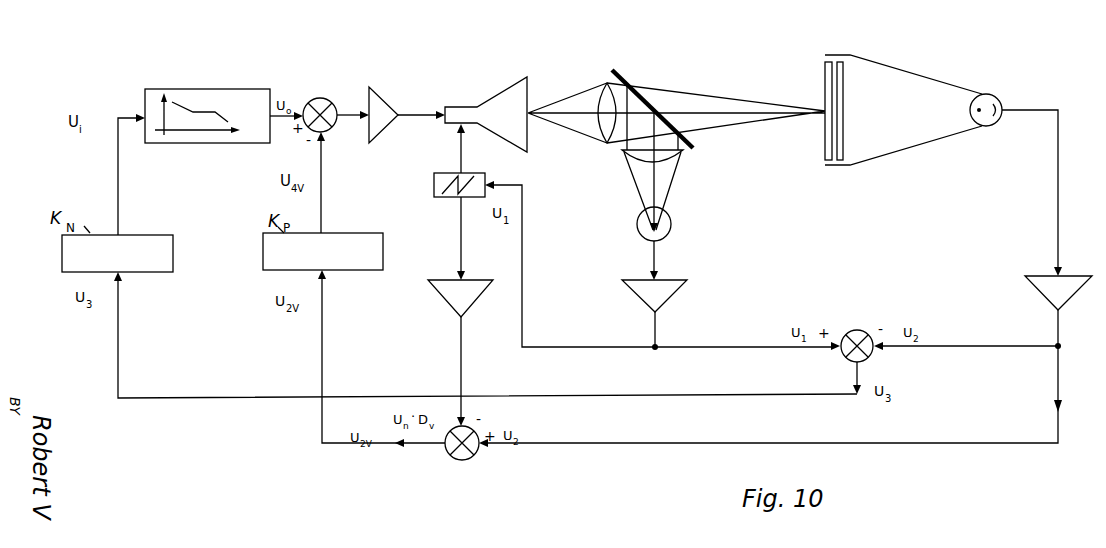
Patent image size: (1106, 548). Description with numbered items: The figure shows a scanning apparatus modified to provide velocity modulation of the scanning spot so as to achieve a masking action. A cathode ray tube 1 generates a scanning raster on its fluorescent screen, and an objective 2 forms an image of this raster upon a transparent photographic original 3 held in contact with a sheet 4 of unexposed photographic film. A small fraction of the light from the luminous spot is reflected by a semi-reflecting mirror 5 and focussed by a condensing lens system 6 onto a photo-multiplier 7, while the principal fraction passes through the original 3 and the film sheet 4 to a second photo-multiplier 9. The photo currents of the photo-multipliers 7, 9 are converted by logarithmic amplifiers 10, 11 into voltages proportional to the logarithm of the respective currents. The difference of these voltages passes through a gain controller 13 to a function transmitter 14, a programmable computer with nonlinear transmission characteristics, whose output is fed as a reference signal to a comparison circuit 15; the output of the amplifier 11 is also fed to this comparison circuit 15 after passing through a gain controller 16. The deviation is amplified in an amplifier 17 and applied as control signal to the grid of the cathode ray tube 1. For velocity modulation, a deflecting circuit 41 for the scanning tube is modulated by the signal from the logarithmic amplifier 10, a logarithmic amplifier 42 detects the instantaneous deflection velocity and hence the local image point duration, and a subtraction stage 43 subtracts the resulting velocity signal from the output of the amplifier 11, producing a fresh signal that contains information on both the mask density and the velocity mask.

The cathode ray tube 1 is at (490, 99).
The objective 2 is at (600, 88).
The transparent photographic original 3 is at (824, 86).
The sheet of unexposed photographic film 4 is at (848, 80).
The semi-reflecting mirror 5 is at (627, 80).
The condensing lens system 6 is at (676, 154).
The photo-multiplier 7 is at (673, 224).
The second photo-multiplier 9 is at (995, 97).
The logarithmic amplifier 10 is at (637, 291).
The logarithmic amplifier 11 is at (1072, 276).
The gain controller 13 is at (62, 262).
The function transmitter 14 is at (190, 89).
The comparison circuit 15 is at (320, 98).
The gain controller 16 is at (263, 265).
The amplifier 17 is at (392, 101).
The deflecting circuit 41 is at (434, 187).
The logarithmic amplifier 42 is at (454, 301).
The subtraction stage 43 is at (462, 461).